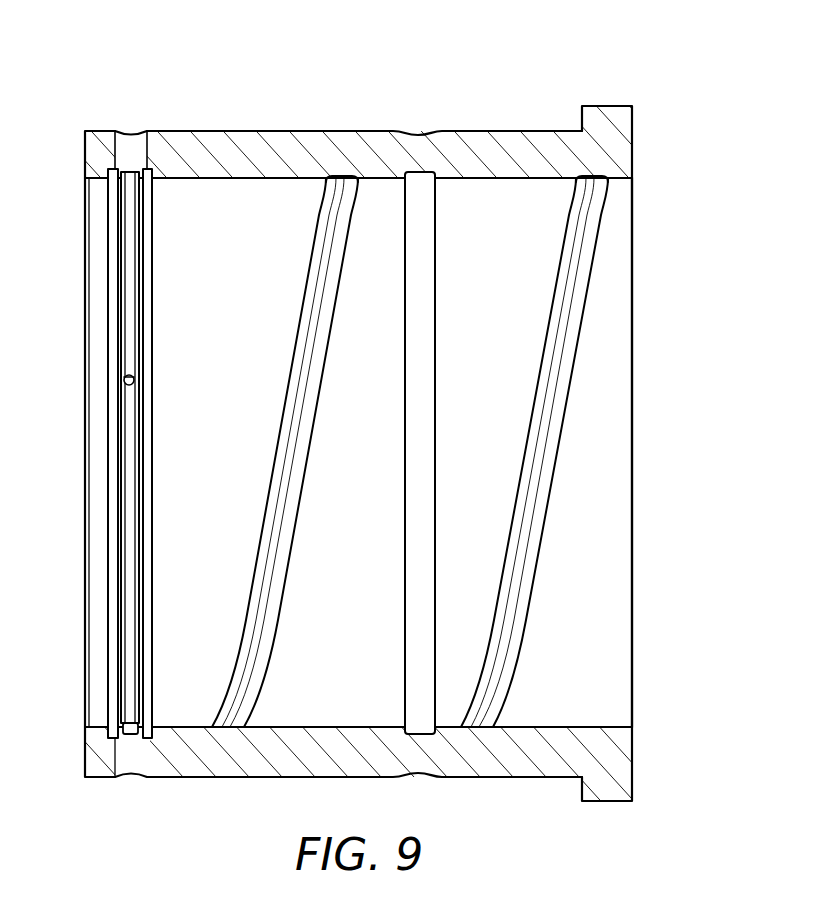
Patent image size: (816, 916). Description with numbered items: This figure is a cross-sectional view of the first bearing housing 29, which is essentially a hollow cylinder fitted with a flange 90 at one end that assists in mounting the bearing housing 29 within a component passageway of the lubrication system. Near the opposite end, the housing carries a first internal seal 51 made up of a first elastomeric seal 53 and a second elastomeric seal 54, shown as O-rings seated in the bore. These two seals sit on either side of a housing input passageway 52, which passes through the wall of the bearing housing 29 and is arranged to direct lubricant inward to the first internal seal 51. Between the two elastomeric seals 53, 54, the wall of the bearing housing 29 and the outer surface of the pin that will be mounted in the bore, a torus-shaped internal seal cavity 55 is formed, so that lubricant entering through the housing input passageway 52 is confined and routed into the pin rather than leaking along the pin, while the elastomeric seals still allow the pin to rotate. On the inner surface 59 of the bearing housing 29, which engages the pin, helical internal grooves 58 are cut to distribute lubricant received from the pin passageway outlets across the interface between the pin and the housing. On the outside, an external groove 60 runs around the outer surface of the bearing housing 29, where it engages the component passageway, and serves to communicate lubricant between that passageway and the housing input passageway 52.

The bearing housing 29 is at (219, 118).
The first internal seal 51 is at (128, 240).
The housing input passageway 52 is at (125, 148).
The first elastomeric seal 53 is at (113, 553).
The second elastomeric seal 54 is at (150, 553).
The internal seal cavity 55 is at (137, 737).
The internal groove 58 is at (315, 262).
The inner surface 59 is at (620, 452).
The external groove 60 is at (420, 130).
The flange 90 is at (603, 105).